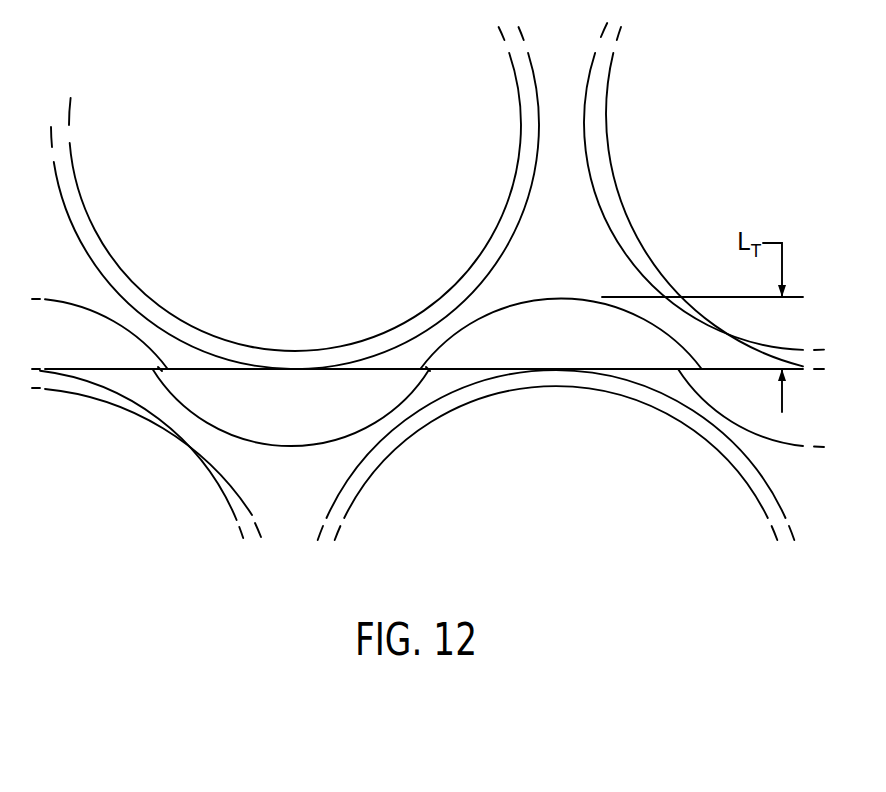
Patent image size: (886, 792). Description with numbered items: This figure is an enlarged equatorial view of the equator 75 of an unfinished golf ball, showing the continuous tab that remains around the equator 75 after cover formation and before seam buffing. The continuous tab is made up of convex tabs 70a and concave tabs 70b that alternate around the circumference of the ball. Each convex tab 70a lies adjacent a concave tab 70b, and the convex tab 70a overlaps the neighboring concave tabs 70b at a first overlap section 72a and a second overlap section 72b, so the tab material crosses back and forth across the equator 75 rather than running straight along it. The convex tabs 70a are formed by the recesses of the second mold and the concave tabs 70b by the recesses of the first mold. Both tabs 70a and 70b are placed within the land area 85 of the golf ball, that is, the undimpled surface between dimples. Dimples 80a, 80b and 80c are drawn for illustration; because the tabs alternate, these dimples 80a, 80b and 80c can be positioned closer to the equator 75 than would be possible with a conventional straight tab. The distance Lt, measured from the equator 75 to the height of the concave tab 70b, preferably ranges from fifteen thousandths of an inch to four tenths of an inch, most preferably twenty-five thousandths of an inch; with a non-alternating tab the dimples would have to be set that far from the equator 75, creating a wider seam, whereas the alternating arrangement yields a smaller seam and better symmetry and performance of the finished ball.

The dimple 80a is at (315, 210).
The dimple 80b is at (590, 492).
The dimple 80c is at (757, 205).
The land area 85 is at (612, 283).
The equator 75 is at (90, 368).
The convex tab 70a is at (283, 438).
The concave tab 70b is at (555, 297).
The first overlap section 72a is at (428, 369).
The second overlap section 72b is at (160, 370).